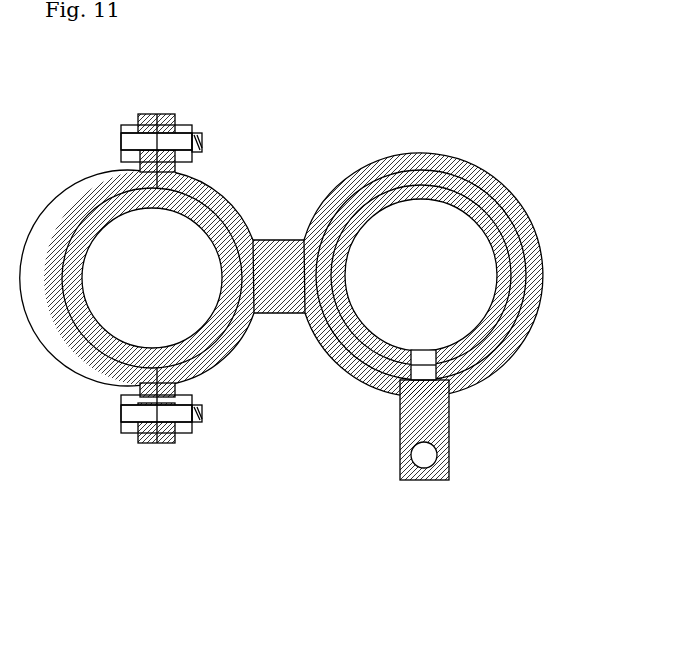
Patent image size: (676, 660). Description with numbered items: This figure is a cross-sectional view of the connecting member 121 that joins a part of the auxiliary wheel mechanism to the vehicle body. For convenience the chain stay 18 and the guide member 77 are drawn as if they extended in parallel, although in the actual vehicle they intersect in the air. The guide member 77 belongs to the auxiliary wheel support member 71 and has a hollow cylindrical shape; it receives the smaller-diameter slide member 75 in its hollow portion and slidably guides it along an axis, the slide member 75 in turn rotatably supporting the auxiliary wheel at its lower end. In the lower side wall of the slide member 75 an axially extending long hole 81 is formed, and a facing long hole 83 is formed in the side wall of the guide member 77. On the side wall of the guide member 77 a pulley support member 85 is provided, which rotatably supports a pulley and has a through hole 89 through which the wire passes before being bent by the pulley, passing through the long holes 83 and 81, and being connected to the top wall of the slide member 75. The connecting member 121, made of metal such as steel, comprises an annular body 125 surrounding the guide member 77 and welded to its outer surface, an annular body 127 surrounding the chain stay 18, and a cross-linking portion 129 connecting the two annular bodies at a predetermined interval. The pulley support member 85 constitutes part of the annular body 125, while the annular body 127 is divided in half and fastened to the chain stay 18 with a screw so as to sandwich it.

The chain stay 18 is at (204, 213).
The auxiliary wheel support member 71 is at (379, 378).
The slide member 75 is at (390, 197).
The guide member 77 is at (438, 177).
The long hole 81 is at (437, 338).
The long hole 83 is at (425, 380).
The pulley support member 85 is at (449, 445).
The through hole 89 is at (422, 463).
The connecting member 121 is at (325, 548).
The annular body 125 is at (355, 370).
The annular body 127 is at (210, 365).
The cross-linking portion 129 is at (282, 297).